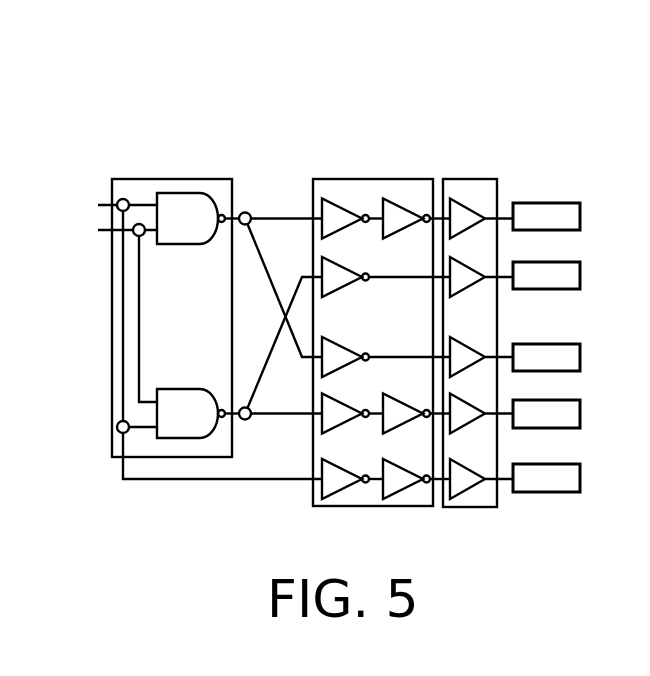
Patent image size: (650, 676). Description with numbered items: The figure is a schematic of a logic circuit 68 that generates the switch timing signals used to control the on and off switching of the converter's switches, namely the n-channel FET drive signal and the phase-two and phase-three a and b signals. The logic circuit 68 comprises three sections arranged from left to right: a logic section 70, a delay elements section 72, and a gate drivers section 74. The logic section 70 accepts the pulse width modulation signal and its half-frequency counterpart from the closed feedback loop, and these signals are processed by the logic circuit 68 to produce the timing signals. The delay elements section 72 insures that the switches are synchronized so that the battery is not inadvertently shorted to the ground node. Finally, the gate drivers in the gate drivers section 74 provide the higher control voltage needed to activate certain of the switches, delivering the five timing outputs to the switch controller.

The logic circuit 68 is at (293, 88).
The logic section 70 is at (173, 179).
The delay elements section 72 is at (375, 179).
The gate drivers section 74 is at (475, 179).